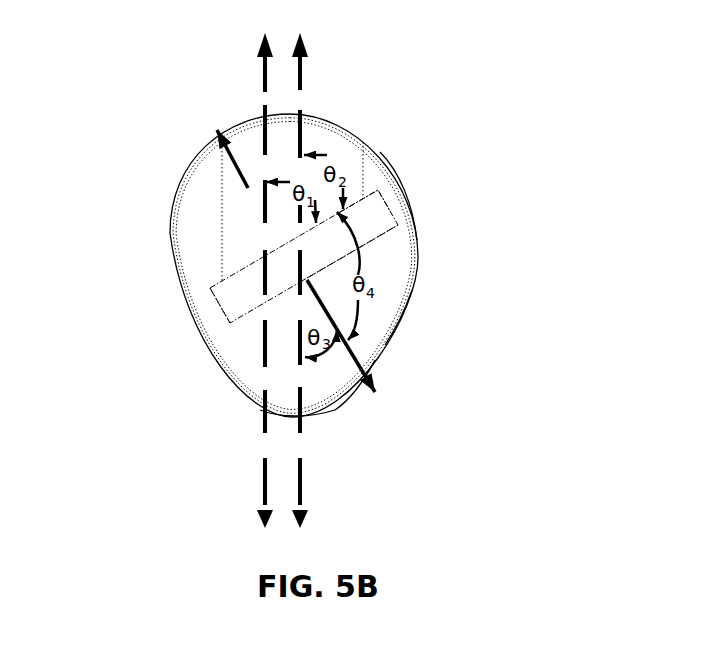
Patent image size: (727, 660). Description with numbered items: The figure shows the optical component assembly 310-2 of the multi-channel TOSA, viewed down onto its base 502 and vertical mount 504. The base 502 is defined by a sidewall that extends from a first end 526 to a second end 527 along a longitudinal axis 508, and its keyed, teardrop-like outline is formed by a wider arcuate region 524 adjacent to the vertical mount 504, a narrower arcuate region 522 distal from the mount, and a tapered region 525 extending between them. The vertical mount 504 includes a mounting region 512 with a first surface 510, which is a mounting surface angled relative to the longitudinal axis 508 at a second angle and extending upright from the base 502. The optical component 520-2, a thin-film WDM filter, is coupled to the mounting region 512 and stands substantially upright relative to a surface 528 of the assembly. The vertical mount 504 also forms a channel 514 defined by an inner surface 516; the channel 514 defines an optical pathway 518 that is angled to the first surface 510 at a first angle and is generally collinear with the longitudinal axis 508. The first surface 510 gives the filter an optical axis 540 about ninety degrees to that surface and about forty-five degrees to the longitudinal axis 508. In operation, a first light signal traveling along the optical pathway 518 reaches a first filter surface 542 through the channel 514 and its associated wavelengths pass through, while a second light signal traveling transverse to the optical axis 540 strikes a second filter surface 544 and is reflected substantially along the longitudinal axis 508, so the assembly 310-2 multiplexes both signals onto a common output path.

The optical component assembly 310-2 is at (132, 38).
The base 502 is at (228, 396).
The vertical mount 504 is at (158, 231).
The longitudinal axis 508 is at (302, 478).
The first surface 510 is at (208, 290).
The mounting region 512 is at (367, 198).
The channel 514 is at (318, 138).
The inner surface 516 is at (366, 165).
The optical pathway 518 is at (263, 133).
The optical component 520-2 is at (366, 244).
The arcuate region 522 is at (348, 395).
The arcuate region 524 is at (400, 172).
The tapered region 525 is at (397, 312).
The first end 526 is at (265, 112).
The second end 527 is at (322, 418).
The surface 528 is at (340, 386).
The optical axis 540 is at (350, 348).
The first filter surface 542 is at (246, 263).
The second filter surface 544 is at (378, 243).